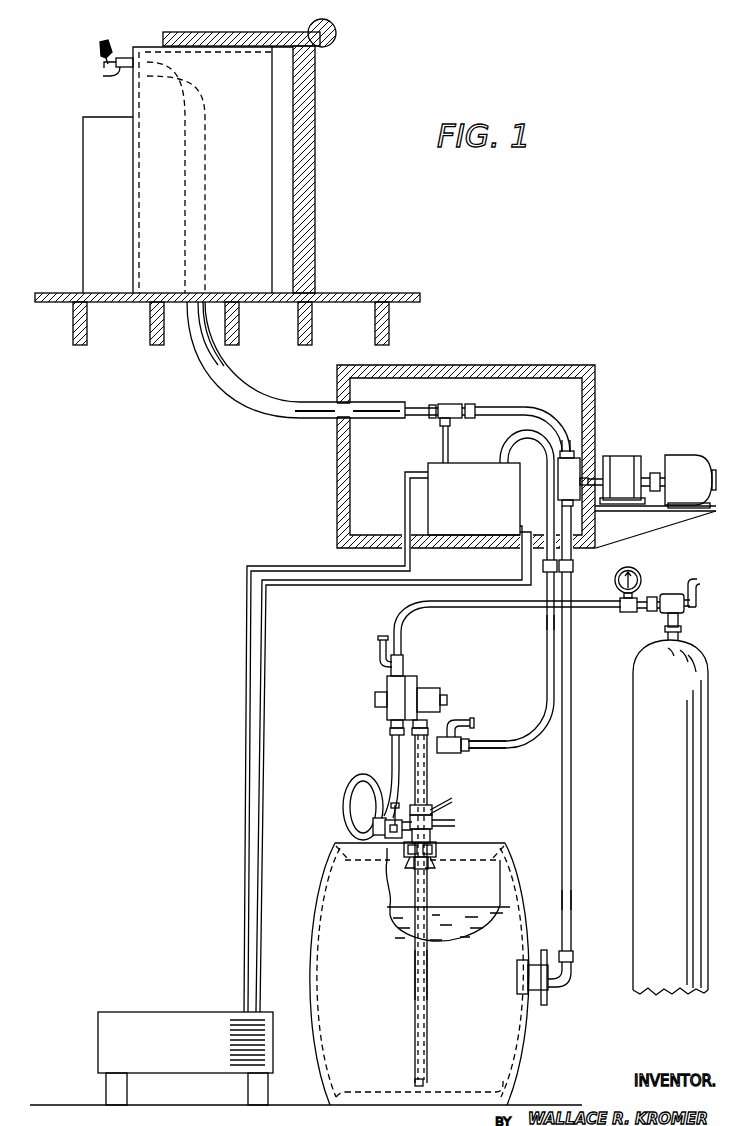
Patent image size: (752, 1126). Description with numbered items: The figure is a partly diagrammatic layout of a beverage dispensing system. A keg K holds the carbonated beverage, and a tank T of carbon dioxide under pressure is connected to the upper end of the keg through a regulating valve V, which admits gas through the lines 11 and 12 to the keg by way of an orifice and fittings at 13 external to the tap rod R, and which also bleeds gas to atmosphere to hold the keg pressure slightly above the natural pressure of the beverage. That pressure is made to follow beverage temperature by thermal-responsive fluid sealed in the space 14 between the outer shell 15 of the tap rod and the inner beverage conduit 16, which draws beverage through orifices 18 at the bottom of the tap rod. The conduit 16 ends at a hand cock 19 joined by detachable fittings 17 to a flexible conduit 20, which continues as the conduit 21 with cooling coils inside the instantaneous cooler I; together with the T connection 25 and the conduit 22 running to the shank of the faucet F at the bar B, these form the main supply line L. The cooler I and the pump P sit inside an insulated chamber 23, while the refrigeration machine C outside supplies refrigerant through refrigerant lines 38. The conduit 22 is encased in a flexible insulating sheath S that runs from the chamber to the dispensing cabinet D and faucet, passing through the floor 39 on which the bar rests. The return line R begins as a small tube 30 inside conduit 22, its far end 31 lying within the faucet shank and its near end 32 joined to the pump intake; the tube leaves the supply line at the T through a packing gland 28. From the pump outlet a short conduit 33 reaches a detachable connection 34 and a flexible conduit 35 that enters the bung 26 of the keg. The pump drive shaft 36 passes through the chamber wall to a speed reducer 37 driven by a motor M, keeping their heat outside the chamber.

The bar B is at (256, 32).
The dispensing cabinet D is at (92, 181).
The dispensing faucet F is at (117, 41).
The floor 39 is at (132, 303).
The insulating sheath S is at (262, 394).
The insulated chamber 23 is at (527, 365).
The conduit 22 is at (428, 400).
The T connection 25 is at (460, 405).
The packing gland 28 is at (478, 407).
The small tube 30 is at (537, 405).
The far end of tube 31 is at (573, 440).
The near end of tube 32 is at (578, 453).
The pump P is at (564, 484).
The instantaneous cooler I is at (433, 461).
The conduit 21 is at (450, 446).
The main supply line L is at (546, 623).
The refrigerant lines 38 is at (404, 500).
The speed reducer 37 is at (634, 457).
The motor M is at (690, 481).
The drive shaft 36 is at (592, 511).
The conduit 33 is at (575, 534).
The detachable fittings 17 is at (543, 568).
The detachable connection 34 is at (573, 568).
The return line R is at (572, 878).
The flexible conduit 35 is at (572, 899).
The gas line 11 is at (588, 608).
The CO2 tank T is at (700, 657).
The regulating valve V is at (389, 688).
The hand cock 19 is at (458, 718).
The flexible conduit 20 is at (516, 748).
The gas line 12 is at (391, 751).
The orifice and fittings 13 is at (429, 838).
The keg K is at (323, 978).
The outer shell 15 is at (428, 908).
The beverage conduit 16 is at (440, 916).
The space 14 is at (413, 966).
The orifices 18 is at (424, 1082).
The bung 26 is at (541, 952).
The refrigeration machine C is at (152, 1012).